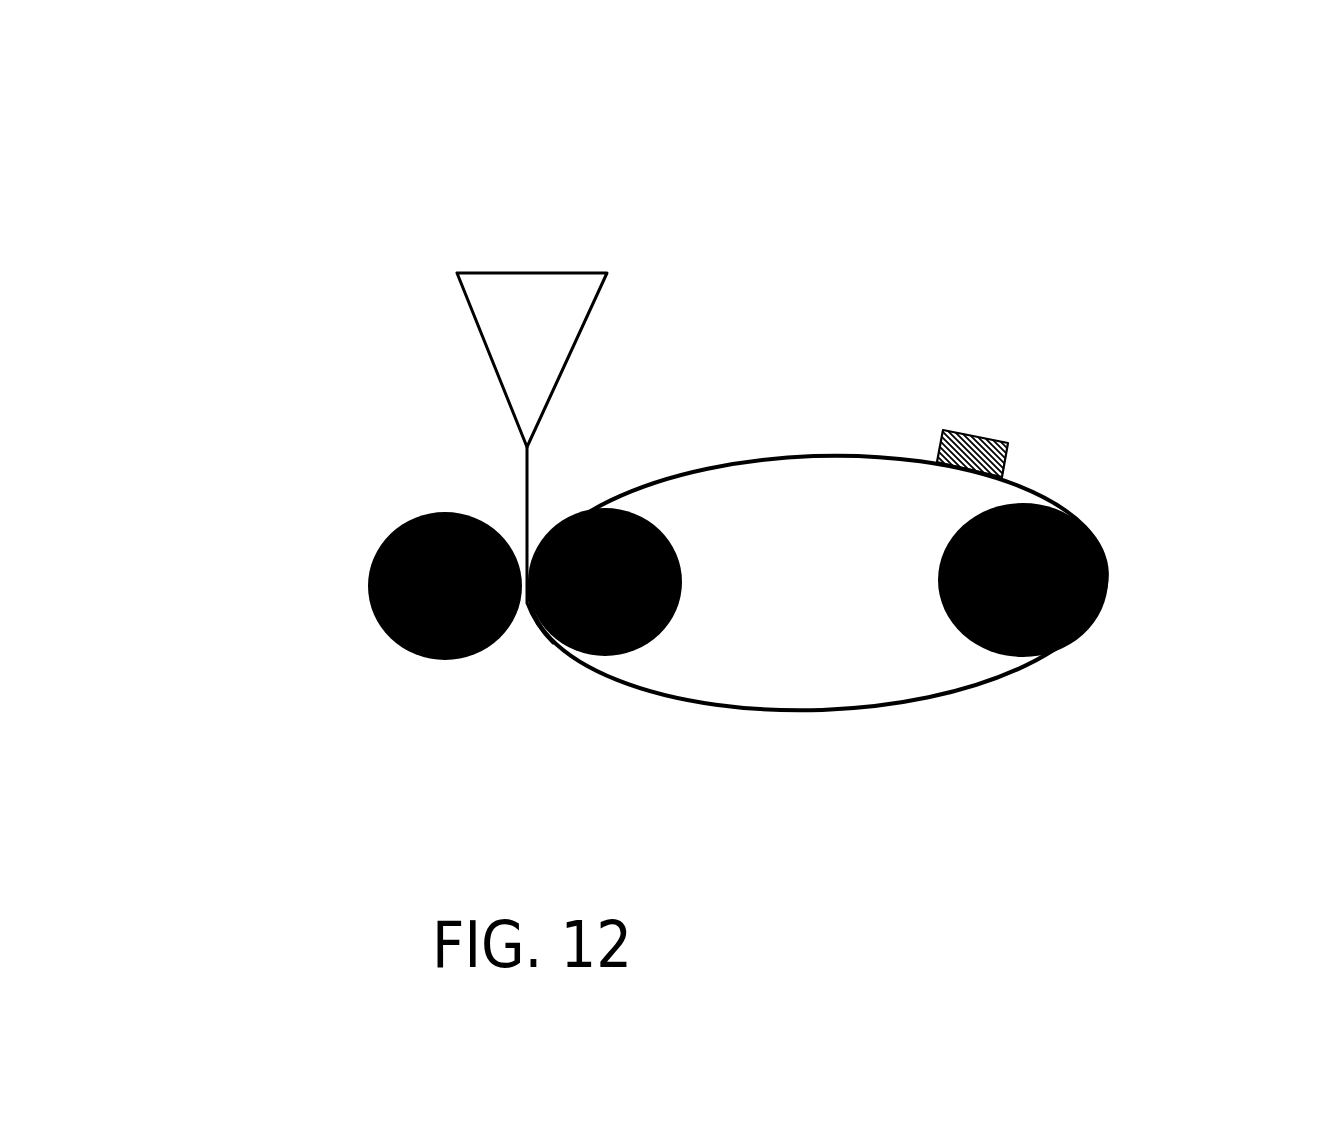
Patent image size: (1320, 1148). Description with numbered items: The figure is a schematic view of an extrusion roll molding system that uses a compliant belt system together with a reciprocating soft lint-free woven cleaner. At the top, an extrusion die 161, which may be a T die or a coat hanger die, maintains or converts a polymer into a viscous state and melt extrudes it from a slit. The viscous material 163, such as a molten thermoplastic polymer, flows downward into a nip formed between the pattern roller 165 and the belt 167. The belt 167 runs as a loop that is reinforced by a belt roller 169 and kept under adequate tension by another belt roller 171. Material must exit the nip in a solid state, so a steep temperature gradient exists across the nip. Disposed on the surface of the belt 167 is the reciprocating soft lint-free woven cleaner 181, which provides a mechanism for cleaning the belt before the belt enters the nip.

The extrusion die 161 is at (520, 322).
The viscous material 163 is at (522, 488).
The pattern roller 165 is at (387, 635).
The belt 167 is at (800, 453).
The belt roller 169 is at (632, 655).
The belt roller 171 is at (1055, 502).
The reciprocating soft lint-free woven cleaner 181 is at (980, 437).